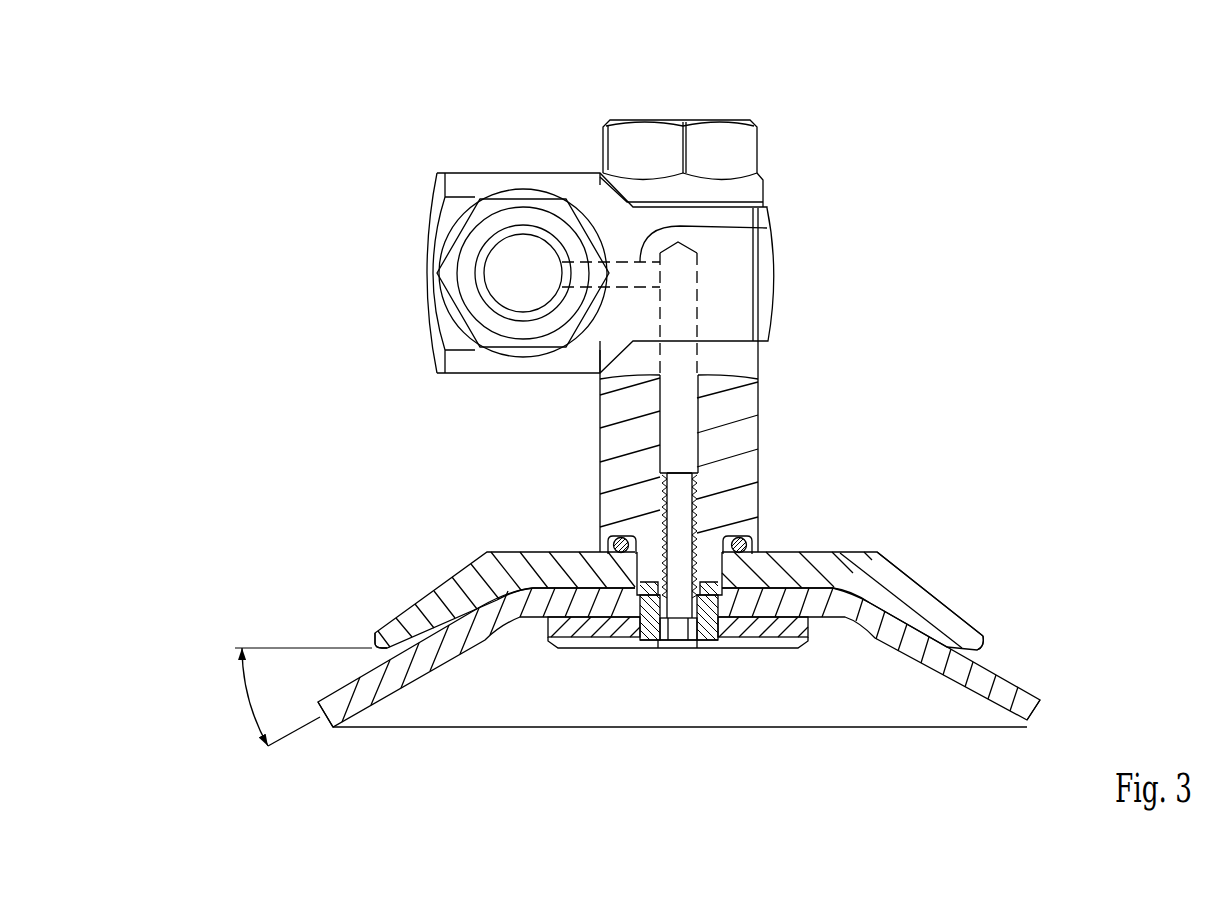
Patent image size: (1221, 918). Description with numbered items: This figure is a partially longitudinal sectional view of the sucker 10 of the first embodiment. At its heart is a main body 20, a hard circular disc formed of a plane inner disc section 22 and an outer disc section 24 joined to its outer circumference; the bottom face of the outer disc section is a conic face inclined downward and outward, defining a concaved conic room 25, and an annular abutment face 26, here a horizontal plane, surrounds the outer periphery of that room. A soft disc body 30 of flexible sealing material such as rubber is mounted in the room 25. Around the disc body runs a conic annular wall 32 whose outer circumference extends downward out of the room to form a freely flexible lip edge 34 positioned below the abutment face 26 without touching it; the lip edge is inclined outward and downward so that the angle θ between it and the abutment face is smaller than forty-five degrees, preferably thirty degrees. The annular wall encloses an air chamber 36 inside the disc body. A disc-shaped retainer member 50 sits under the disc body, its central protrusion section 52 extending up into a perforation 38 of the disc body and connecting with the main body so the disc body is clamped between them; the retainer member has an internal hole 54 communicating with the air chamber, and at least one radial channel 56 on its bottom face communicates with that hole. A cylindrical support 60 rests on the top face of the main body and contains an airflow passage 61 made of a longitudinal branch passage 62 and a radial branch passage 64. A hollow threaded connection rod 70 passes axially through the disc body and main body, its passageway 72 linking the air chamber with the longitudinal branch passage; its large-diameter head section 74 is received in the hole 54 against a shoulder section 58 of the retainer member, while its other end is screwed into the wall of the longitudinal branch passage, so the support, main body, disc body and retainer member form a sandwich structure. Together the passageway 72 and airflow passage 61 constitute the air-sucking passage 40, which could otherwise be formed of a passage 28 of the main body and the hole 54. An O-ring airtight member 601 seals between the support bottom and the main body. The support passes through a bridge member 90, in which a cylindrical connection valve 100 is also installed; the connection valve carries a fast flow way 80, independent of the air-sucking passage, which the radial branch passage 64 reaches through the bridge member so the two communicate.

The sucker 10 is at (1010, 185).
The main body 20 is at (917, 553).
The inner disc section 22 is at (868, 552).
The outer disc section 24 is at (932, 597).
The room 25 is at (915, 617).
The annular abutment face 26 is at (388, 640).
The passage 28 is at (640, 585).
The disc body 30 is at (1008, 672).
The annular wall 32 is at (937, 665).
The lip edge 34 is at (372, 718).
The air chamber 36 is at (477, 690).
The perforation 38 is at (515, 558).
The air-sucking passage 40 is at (690, 405).
The retainer member 50 is at (767, 657).
The protrusion section 52 is at (740, 600).
The hole 54 is at (737, 640).
The channel 56 is at (593, 648).
The shoulder section 58 is at (650, 595).
The support 60 is at (713, 115).
The airflow passage 61 is at (906, 213).
The longitudinal branch passage 62 is at (677, 328).
The radial branch passage 64 is at (770, 231).
The connection rod 70 is at (667, 472).
The passageway 72 is at (680, 500).
The head section 74 is at (650, 642).
The fast flow way 80 is at (523, 258).
The bridge member 90 is at (430, 150).
The connection valve 100 is at (478, 248).
The airtight member 601 is at (745, 545).